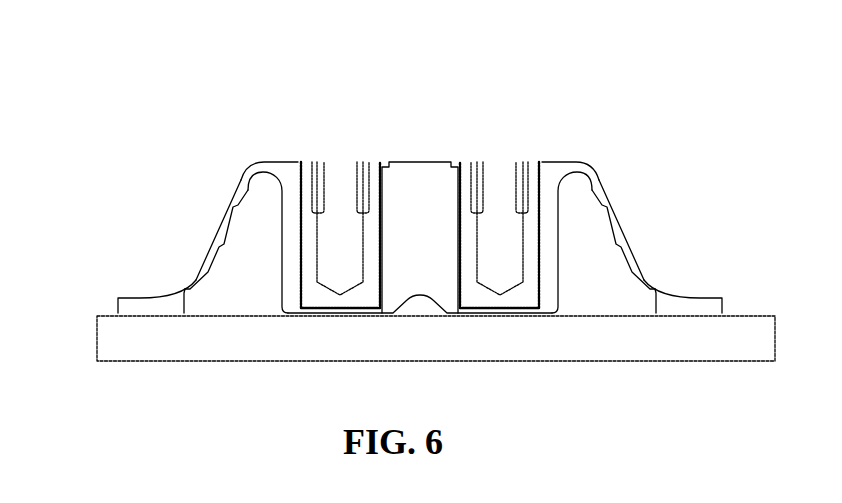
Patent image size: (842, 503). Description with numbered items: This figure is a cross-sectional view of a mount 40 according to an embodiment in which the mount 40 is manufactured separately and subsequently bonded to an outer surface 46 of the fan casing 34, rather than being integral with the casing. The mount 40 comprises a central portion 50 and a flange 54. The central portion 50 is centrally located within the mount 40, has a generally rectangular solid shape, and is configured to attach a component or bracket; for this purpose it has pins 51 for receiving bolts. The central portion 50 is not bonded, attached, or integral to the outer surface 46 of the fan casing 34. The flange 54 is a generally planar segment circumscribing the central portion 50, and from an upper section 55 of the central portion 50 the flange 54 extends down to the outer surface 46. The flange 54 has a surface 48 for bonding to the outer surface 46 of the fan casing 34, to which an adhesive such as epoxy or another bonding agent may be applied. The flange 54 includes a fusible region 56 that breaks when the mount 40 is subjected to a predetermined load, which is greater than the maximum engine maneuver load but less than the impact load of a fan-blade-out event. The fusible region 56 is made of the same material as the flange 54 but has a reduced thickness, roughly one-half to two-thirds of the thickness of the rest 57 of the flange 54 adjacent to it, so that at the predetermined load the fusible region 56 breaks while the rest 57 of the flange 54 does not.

The fan casing 34 is at (642, 345).
The mount 40 is at (108, 163).
The outer surface 46 is at (246, 308).
The surface 48 is at (142, 315).
The central portion 50 is at (405, 173).
The pins 51 is at (307, 198).
The flange 54 is at (238, 178).
The upper section 55 is at (577, 160).
The fusible region 56 is at (213, 222).
The rest of the flange 57 is at (238, 192).